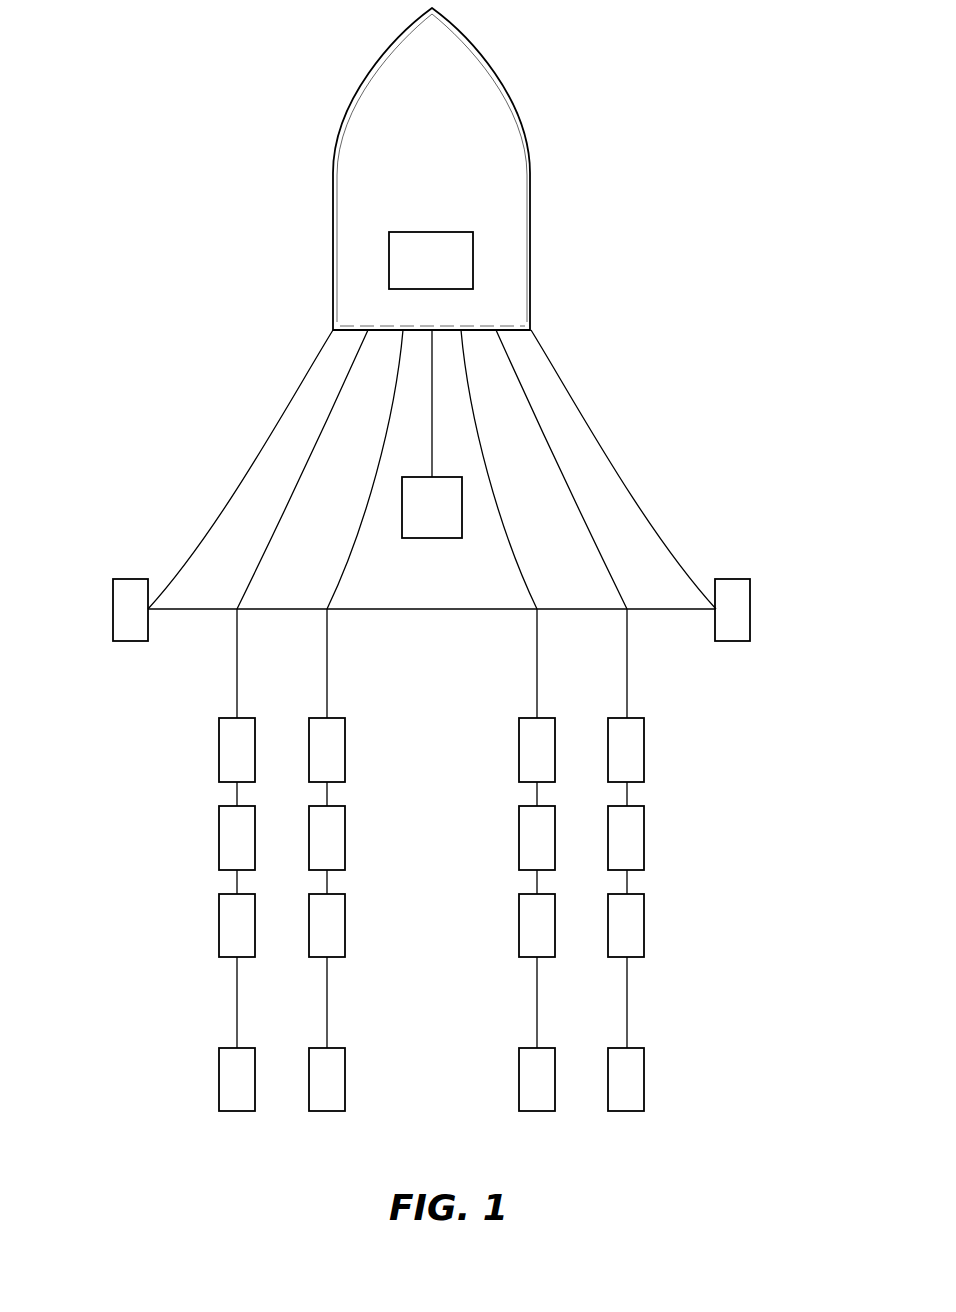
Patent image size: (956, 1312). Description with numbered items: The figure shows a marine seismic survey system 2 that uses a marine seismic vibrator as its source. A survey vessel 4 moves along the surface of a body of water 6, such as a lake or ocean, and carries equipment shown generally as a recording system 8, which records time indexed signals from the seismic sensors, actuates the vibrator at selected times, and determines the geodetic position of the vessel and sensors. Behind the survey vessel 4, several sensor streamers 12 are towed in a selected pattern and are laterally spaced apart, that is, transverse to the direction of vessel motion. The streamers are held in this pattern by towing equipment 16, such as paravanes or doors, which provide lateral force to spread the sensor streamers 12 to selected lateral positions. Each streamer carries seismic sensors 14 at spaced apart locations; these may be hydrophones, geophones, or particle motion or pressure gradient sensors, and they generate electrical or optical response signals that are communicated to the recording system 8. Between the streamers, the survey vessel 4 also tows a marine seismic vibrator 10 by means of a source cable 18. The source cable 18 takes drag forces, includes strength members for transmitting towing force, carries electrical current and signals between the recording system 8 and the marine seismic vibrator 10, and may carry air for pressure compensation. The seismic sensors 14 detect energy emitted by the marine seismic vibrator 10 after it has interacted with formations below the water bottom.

The marine seismic survey system 2 is at (612, 304).
The survey vessel 4 is at (369, 71).
The body of water 6 is at (226, 346).
The recording system 8 is at (430, 232).
The marine seismic vibrator 10 is at (430, 538).
The sensor streamers 12 is at (237, 668).
The seismic sensors 14 is at (219, 750).
The towing equipment 16 is at (113, 605).
The source cable 18 is at (432, 428).